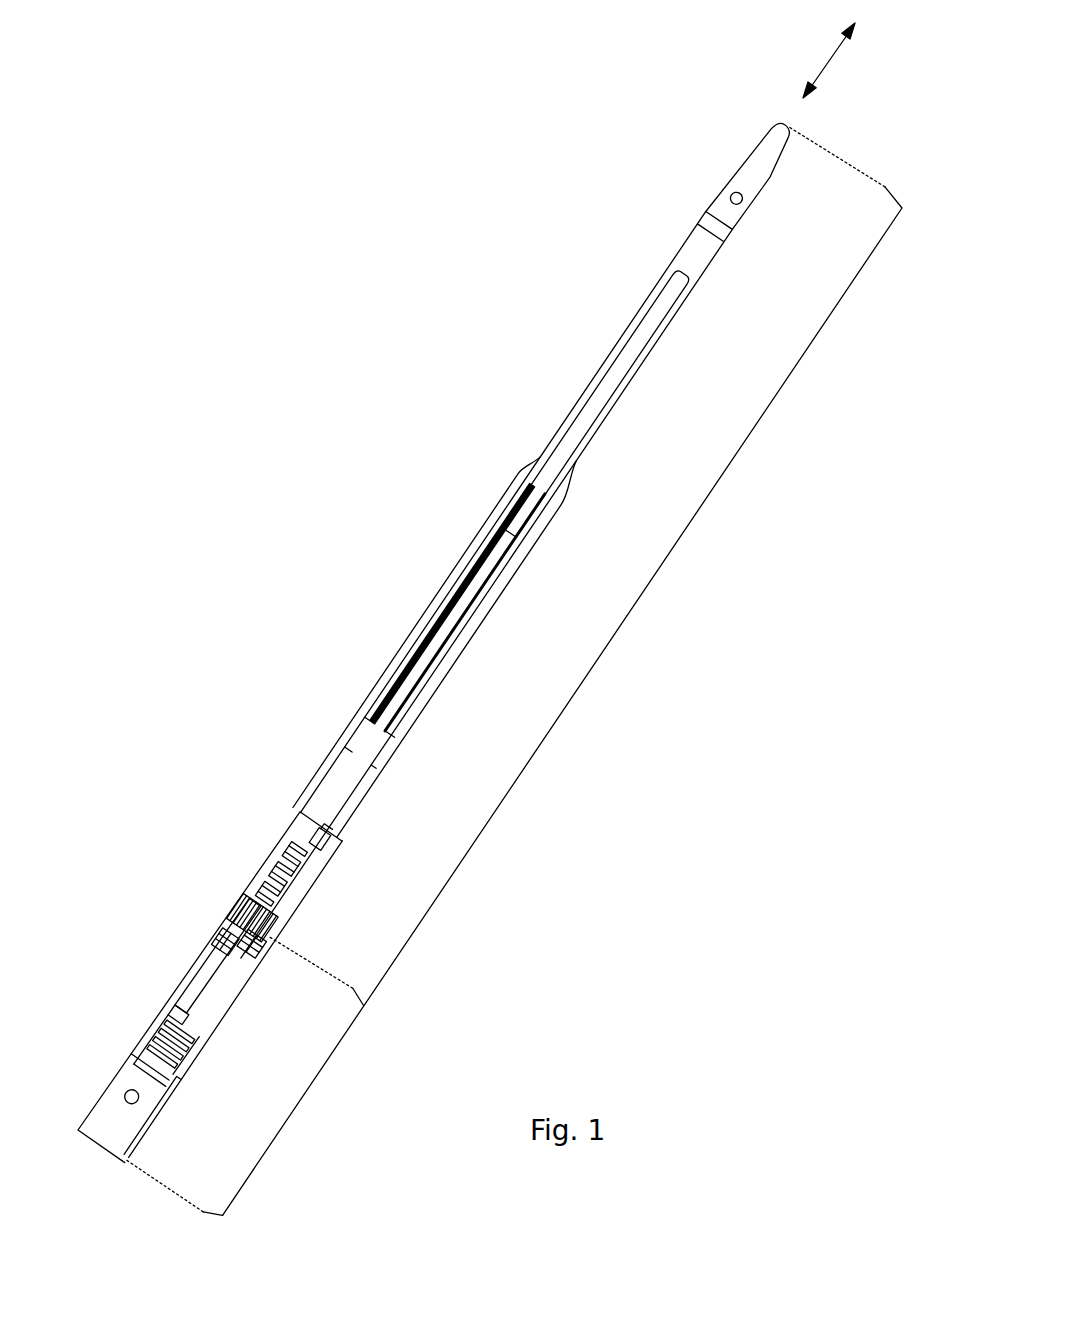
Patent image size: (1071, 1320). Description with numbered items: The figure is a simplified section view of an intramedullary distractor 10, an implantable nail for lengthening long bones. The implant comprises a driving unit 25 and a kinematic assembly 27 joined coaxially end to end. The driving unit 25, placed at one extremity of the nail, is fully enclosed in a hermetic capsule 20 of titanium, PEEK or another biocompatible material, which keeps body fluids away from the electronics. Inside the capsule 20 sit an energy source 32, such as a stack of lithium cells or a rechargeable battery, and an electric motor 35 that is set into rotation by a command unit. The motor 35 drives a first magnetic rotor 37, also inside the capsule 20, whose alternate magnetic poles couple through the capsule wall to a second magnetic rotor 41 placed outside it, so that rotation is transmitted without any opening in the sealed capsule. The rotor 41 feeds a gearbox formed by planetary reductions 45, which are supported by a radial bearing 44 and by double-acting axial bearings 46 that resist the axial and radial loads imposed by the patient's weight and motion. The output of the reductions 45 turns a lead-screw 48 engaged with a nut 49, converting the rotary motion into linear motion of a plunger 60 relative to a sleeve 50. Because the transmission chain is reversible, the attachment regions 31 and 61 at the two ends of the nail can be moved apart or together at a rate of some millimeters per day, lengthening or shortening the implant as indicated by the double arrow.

The intramedullary distractor 10 is at (360, 348).
The hermetic capsule 20 is at (163, 1012).
The driving unit 25 is at (229, 1163).
The kinematic assembly 27 is at (507, 669).
The attachment region 31 is at (125, 1095).
The energy source or rechargeable energy storage 32 is at (190, 1068).
The motor 35 is at (200, 977).
The magnetic rotor 37 is at (263, 945).
The magnetic rotor 41 is at (223, 903).
The radial bearing 44 is at (245, 903).
The planetary reductions 45 is at (302, 873).
The axial bearing 46 is at (325, 838).
The lead-screw 48 is at (468, 588).
The nut 49 is at (363, 717).
The sleeve 50 is at (468, 547).
The plunger 60 is at (605, 350).
The attachment region 61 is at (729, 191).